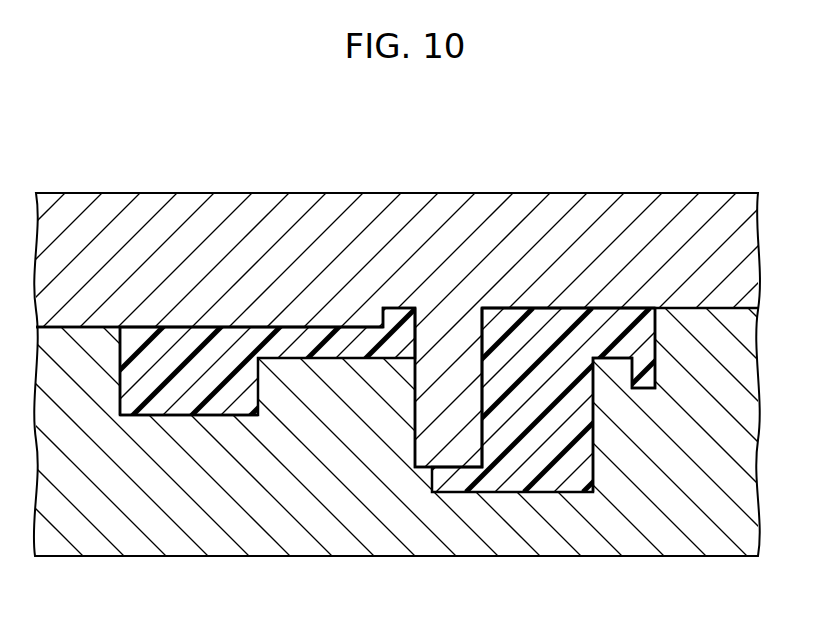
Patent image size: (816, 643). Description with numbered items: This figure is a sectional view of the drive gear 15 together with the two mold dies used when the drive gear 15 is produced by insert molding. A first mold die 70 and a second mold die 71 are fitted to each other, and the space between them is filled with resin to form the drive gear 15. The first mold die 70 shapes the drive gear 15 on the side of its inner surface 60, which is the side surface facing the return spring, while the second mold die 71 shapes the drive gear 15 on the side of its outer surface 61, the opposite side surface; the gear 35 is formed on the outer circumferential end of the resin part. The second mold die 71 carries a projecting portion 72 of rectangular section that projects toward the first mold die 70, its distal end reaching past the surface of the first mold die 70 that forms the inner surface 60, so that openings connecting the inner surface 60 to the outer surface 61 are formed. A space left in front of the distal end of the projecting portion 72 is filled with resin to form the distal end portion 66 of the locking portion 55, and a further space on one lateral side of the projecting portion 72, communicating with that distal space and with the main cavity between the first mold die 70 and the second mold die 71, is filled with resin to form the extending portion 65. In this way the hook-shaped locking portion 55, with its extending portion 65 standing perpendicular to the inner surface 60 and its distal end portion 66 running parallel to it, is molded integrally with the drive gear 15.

The drive gear 15 is at (211, 422).
The gear 35 is at (120, 390).
The locking portion 55 is at (544, 492).
The inner surface 60 is at (330, 358).
The outer surface 61 is at (298, 327).
The extending portion 65 is at (596, 432).
The distal end portion 66 is at (452, 492).
The first mold die 70 is at (717, 535).
The second mold die 71 is at (676, 205).
The projecting portion 72 is at (487, 340).